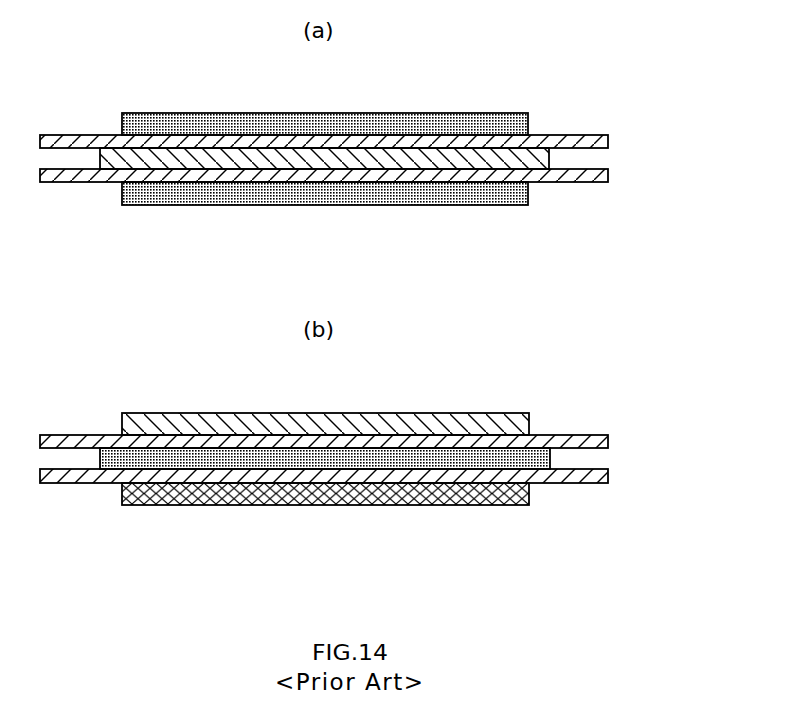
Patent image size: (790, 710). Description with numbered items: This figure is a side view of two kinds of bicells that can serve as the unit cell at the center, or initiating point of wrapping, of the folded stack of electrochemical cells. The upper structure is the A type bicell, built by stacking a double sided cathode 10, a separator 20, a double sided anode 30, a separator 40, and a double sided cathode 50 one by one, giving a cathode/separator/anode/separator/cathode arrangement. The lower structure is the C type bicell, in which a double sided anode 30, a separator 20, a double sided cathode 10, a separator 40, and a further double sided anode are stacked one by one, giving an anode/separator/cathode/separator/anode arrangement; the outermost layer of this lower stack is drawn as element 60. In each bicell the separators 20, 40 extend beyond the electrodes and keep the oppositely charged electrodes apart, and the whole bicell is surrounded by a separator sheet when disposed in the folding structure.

The double sided cathode 10 is at (518, 123).
The separator 20 is at (603, 141).
The double sided anode 30 is at (549, 156).
The separator 40 is at (603, 176).
The double sided cathode 50 is at (518, 195).
The electrode 60 is at (529, 487).